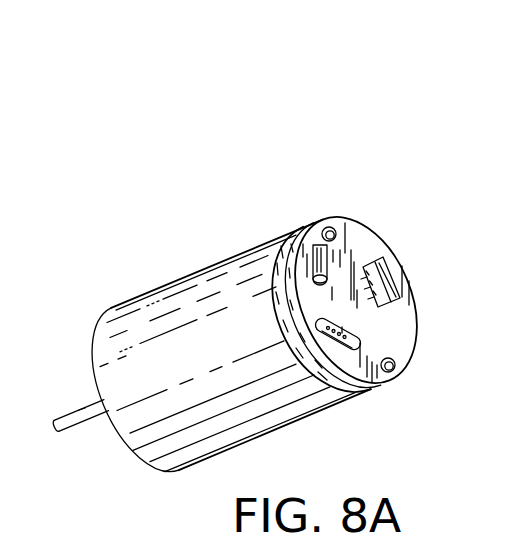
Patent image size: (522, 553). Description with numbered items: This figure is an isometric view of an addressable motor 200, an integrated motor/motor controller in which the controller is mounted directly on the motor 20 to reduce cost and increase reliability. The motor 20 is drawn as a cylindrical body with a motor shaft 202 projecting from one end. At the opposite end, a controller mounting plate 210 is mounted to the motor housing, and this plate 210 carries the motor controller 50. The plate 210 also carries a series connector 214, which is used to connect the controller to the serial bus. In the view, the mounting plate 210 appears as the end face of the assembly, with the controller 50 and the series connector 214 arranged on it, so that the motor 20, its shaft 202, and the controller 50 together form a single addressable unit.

The addressable motor 200 is at (318, 164).
The motor 20 is at (158, 289).
The motor shaft 202 is at (72, 412).
The controller mounting plate 210 is at (373, 232).
The motor controller 50 is at (397, 262).
The series connector 214 is at (353, 348).